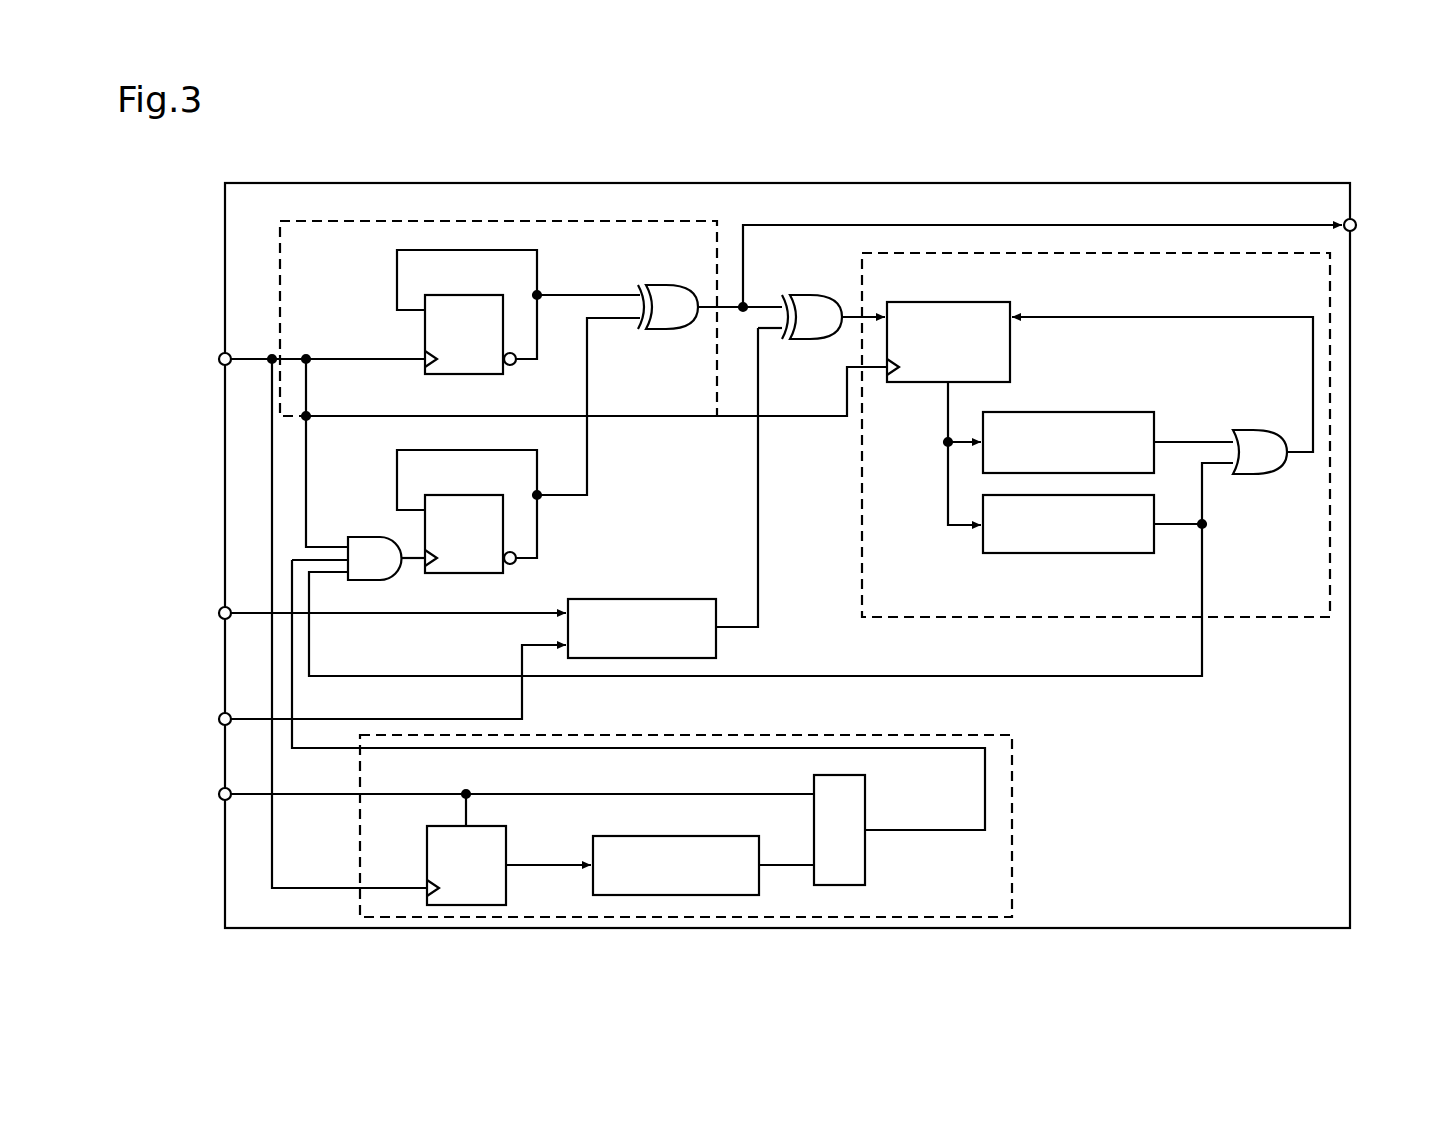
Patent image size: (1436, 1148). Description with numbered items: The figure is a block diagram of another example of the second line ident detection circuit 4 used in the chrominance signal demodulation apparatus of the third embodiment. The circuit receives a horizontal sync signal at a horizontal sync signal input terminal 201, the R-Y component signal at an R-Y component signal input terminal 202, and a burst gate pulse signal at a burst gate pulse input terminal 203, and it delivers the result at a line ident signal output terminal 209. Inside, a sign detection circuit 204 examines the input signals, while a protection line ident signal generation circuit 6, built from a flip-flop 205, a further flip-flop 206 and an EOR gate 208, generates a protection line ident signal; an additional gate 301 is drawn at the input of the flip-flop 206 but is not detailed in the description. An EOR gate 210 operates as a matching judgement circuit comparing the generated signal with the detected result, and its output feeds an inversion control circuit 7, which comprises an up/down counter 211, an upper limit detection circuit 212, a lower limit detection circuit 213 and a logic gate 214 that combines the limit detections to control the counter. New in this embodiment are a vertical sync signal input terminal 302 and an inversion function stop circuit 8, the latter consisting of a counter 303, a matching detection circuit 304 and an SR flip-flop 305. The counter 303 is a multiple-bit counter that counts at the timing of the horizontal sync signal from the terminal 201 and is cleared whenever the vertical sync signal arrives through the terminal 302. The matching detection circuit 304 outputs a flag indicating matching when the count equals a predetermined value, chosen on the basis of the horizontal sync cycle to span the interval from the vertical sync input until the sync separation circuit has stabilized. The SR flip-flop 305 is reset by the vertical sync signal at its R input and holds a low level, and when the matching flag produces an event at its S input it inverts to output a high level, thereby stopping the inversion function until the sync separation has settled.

The second line ident detection circuit 4 is at (1213, 182).
The protection line ident signal generation circuit 6 is at (597, 221).
The inversion control circuit 7 is at (860, 576).
The inversion function stop circuit 8 is at (1012, 758).
The horizontal sync signal input terminal 201 is at (220, 361).
The R-Y component signal input terminal 202 is at (220, 614).
The burst gate pulse input terminal 203 is at (220, 721).
The sign detection circuit 204 is at (716, 648).
The flip-flop 205 is at (455, 295).
The flip-flop 206 is at (455, 495).
The EOR gate 208 is at (668, 283).
The line ident signal output terminal 209 is at (1356, 217).
The EOR gate 210 is at (812, 292).
The up/down counter 211 is at (985, 302).
The upper limit detection circuit 212 is at (1130, 412).
The lower limit detection circuit 213 is at (1004, 553).
The logic gate 214 is at (1258, 430).
The AND gate 301 is at (360, 537).
The vertical sync signal input terminal 302 is at (220, 794).
The counter 303 is at (508, 835).
The matching detection circuit 304 is at (706, 836).
The SR flip-flop 305 is at (867, 792).